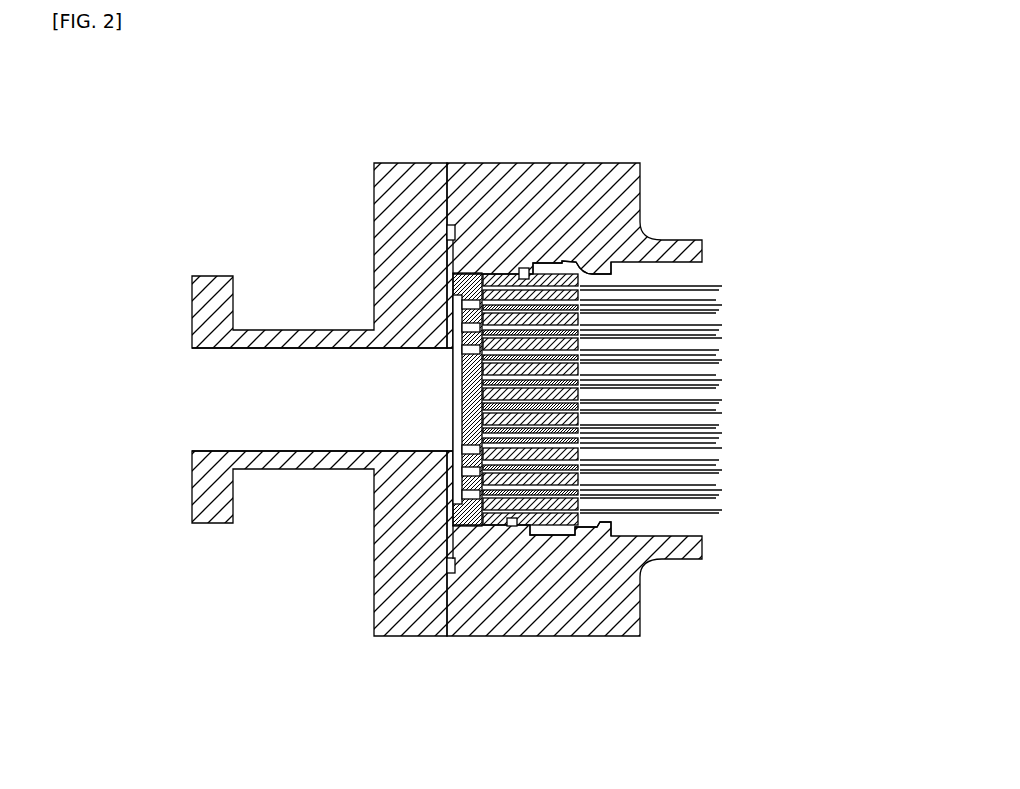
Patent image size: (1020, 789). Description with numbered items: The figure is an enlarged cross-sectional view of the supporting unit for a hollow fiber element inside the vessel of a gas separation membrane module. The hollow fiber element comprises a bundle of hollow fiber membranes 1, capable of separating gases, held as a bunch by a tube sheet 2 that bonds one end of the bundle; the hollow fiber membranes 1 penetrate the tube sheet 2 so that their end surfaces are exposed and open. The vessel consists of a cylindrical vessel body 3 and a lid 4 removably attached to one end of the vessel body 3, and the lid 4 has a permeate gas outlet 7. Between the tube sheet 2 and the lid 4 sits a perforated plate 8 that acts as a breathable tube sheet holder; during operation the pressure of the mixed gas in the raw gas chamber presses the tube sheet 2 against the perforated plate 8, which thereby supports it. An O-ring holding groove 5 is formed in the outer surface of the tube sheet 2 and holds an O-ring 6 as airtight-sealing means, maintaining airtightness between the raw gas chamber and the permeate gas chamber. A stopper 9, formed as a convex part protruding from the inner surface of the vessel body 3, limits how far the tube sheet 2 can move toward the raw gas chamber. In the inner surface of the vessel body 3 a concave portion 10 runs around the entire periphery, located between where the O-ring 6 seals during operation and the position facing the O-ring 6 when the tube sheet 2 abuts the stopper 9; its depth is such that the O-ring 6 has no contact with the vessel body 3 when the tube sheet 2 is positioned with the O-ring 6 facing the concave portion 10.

The hollow fiber membranes 1 is at (702, 285).
The tube sheet 2 is at (540, 527).
The vessel body 3 is at (617, 572).
The lid 4 is at (418, 571).
The O-ring holding groove 5 is at (520, 273).
The O-ring 6 is at (509, 273).
The permeate gas outlet 7 is at (242, 397).
The perforated plate 8 is at (457, 277).
The stopper 9 is at (607, 528).
The concave portion 10 is at (560, 267).